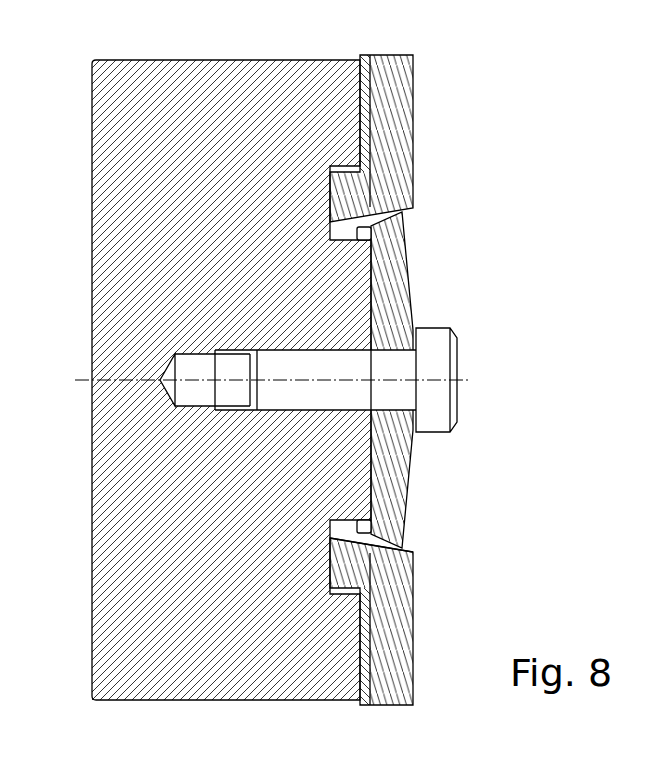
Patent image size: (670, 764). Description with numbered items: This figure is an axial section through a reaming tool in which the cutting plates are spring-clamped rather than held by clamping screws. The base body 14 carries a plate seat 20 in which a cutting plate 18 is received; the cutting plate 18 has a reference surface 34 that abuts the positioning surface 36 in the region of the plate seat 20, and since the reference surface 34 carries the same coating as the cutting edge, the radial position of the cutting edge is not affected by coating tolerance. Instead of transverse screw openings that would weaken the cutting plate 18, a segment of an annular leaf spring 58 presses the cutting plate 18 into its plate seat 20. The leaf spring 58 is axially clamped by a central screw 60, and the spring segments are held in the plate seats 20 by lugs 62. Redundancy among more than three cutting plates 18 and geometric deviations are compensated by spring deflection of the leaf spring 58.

The base body 14 is at (122, 125).
The cutting plate 18 is at (413, 66).
The plate seat 20 is at (367, 107).
The annular leaf spring 58 is at (413, 274).
The central screw 60 is at (458, 380).
The lug 62 is at (357, 238).
The positioning surface 36 is at (340, 592).
The reference surface 34 is at (333, 595).